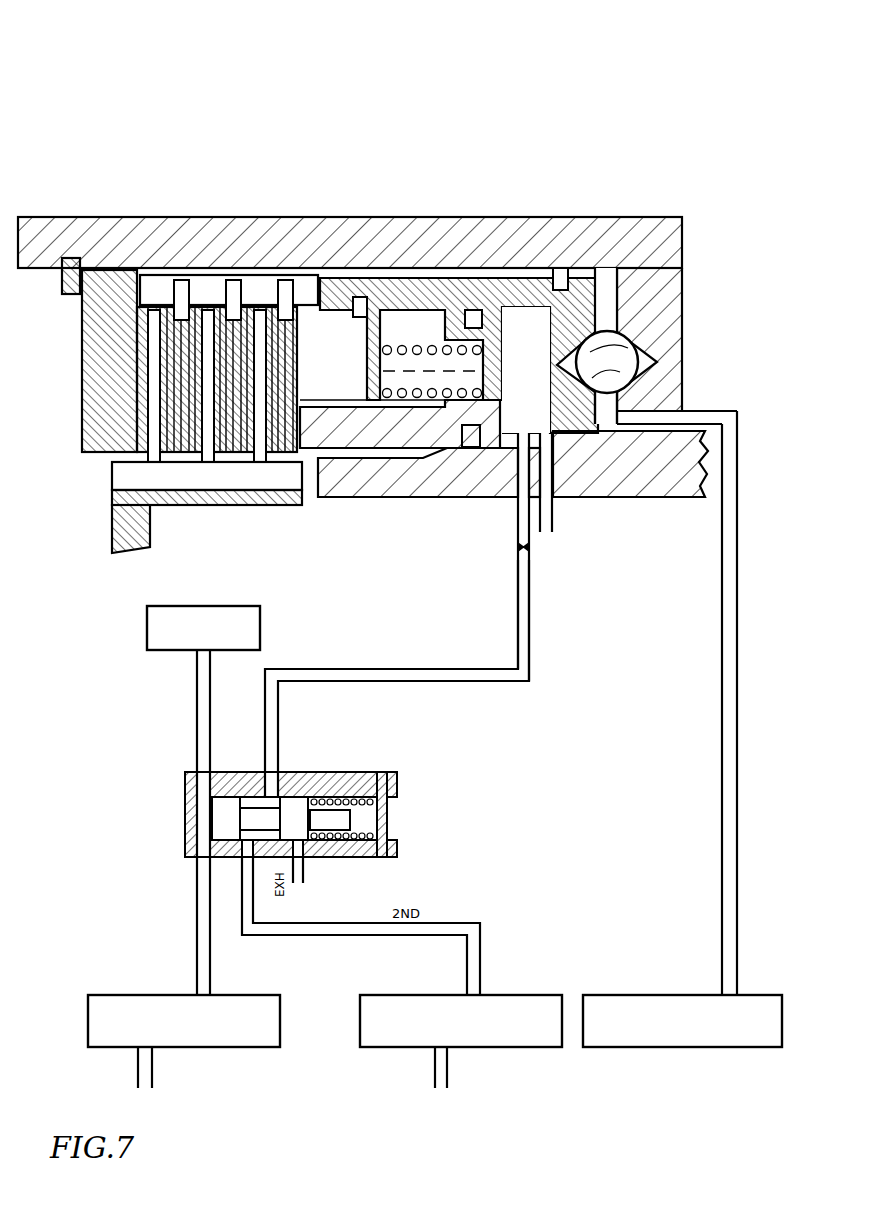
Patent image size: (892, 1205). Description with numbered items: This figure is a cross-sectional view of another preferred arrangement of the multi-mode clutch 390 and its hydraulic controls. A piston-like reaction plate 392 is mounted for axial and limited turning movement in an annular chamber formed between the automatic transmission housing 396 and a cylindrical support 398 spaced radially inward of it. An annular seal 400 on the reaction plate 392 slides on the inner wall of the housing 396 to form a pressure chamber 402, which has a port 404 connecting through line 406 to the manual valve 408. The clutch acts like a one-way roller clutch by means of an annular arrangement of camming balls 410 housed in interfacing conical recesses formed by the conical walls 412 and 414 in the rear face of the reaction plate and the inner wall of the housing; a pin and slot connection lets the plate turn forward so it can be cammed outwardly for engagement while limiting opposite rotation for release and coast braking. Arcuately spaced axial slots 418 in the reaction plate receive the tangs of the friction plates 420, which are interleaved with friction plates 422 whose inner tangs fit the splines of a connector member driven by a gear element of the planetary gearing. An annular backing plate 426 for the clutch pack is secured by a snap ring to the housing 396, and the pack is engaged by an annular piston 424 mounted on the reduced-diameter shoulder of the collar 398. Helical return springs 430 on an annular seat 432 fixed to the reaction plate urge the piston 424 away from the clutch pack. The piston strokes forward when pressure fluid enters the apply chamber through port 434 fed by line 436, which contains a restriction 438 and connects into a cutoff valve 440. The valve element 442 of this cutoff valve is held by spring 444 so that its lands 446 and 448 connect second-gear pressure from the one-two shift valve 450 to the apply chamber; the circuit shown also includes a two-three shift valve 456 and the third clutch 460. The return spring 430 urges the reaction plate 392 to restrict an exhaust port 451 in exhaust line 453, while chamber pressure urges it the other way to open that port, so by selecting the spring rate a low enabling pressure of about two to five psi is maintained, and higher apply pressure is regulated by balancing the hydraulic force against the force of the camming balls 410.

The multi-mode clutch 390 is at (428, 183).
The reaction plate 392 is at (585, 268).
The automatic transmission housing 396 is at (588, 243).
The cylindrical support 398 is at (443, 431).
The annular seal 400 is at (560, 273).
The pressure chamber 402 is at (632, 297).
The port 404 is at (633, 422).
The line 406 is at (728, 672).
The manual valve 408 is at (692, 1037).
The camming balls 410 is at (632, 338).
The conical wall 412 is at (612, 360).
The conical wall 414 is at (622, 378).
The axial slots 418 is at (207, 290).
The friction plate 420 is at (283, 292).
The friction plates 422 is at (185, 308).
The annular piston 424 is at (430, 480).
The annular backing plate 426 is at (96, 450).
The helical return springs 430 is at (398, 393).
The annular seat 432 is at (372, 303).
The port 434 is at (517, 483).
The line 436 is at (523, 635).
The restriction 438 is at (518, 547).
The cutoff valve 440 is at (342, 793).
The valve element 442 is at (320, 815).
The spring 444 is at (370, 843).
The land 446 is at (227, 810).
The land 448 is at (293, 808).
The 1-2 shift valve 450 is at (475, 1047).
The exhaust port 451 is at (613, 433).
The exhaust line 453 is at (548, 517).
The 2-3 shift valve 456 is at (240, 1045).
The third clutch 460 is at (148, 615).